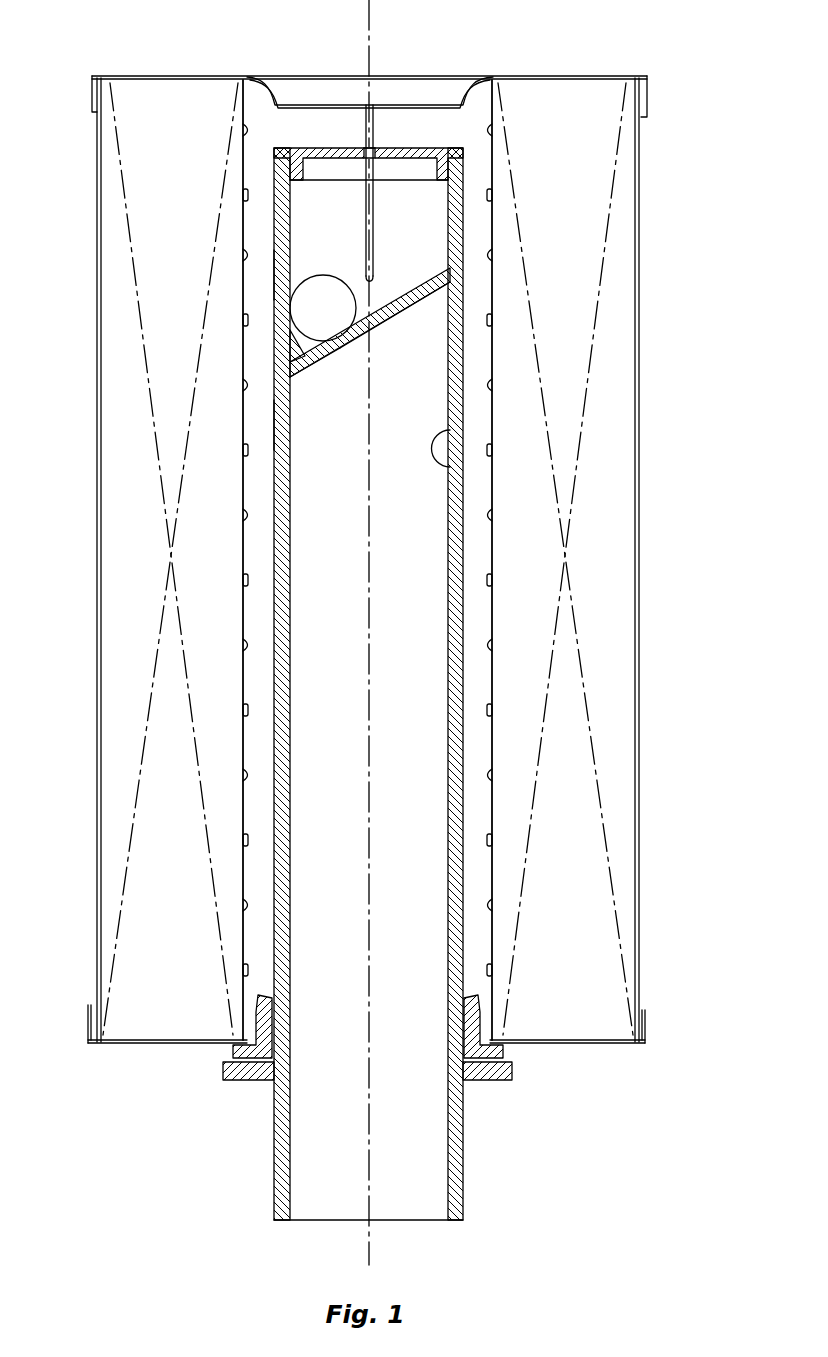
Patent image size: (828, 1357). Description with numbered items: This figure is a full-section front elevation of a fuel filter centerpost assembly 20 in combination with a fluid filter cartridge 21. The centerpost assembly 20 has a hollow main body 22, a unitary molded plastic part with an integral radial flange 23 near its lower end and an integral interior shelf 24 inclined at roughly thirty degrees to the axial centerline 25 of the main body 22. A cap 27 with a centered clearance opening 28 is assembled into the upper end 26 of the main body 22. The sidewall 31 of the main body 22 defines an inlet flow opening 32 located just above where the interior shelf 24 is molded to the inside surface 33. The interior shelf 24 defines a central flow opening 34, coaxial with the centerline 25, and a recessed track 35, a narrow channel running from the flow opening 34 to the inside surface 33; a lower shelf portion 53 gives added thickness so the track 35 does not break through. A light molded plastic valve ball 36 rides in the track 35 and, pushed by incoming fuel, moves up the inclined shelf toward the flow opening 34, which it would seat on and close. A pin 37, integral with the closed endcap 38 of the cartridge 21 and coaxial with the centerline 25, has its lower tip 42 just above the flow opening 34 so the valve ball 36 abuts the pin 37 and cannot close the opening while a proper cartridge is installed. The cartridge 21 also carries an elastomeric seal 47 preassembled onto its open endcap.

The centerpost assembly 20 is at (275, 936).
The fluid filter cartridge 21 is at (612, 778).
The main body 22 is at (283, 710).
The radial flange 23 is at (243, 1078).
The interior shelf 24 is at (420, 298).
The axial centerline 25 is at (372, 4).
The upper end 26 is at (467, 178).
The cap 27 is at (460, 140).
The clearance opening 28 is at (357, 147).
The sidewall 31 is at (283, 420).
The inlet flow opening 32 is at (283, 278).
The inside surface 33 is at (453, 430).
The flow opening 34 is at (358, 347).
The recessed track 35 is at (275, 337).
The valve ball 36 is at (323, 305).
The pin 37 is at (378, 258).
The closed endcap 38 is at (435, 103).
The lower tip 42 is at (362, 262).
The elastomeric seal 47 is at (483, 1068).
The lower shelf portion 53 is at (328, 360).